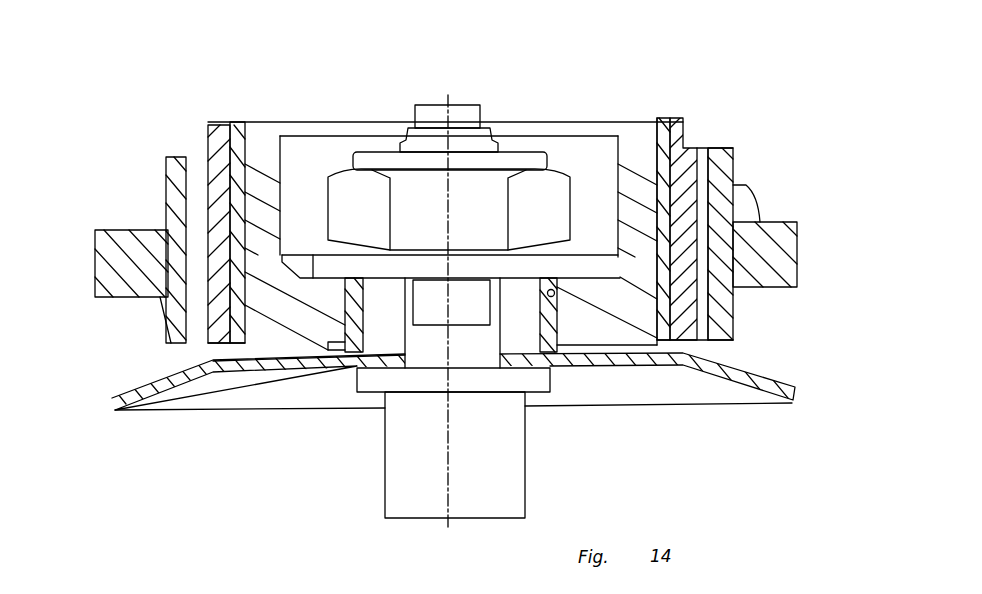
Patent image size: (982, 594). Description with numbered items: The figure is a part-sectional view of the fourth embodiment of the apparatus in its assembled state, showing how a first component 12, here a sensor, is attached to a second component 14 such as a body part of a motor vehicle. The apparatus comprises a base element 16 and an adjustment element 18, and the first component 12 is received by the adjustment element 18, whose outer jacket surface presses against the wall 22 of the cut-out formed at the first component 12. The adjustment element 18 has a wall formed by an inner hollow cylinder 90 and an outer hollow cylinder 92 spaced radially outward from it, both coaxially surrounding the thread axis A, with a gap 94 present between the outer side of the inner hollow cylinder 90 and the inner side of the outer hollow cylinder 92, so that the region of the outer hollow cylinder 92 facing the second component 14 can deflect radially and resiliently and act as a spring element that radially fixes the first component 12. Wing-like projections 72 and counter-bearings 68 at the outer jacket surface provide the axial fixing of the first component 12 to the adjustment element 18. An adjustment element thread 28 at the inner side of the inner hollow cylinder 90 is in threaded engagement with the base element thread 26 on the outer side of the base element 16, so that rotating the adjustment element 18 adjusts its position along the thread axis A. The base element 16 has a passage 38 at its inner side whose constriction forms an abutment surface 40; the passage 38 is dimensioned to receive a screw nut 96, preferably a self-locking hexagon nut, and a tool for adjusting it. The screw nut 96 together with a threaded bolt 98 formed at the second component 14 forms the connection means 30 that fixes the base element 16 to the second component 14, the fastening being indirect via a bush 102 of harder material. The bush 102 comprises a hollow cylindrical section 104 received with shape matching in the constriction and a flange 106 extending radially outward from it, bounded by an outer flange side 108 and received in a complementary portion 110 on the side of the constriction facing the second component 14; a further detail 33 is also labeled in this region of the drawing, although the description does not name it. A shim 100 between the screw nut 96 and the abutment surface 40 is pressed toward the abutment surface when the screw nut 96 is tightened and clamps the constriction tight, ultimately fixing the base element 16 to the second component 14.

The first component 12 is at (122, 226).
The second component 14 is at (754, 369).
The base element 16 is at (268, 355).
The adjustment element 18 is at (207, 129).
The wall 22 is at (790, 258).
The base element thread 26 is at (665, 202).
The adjustment element thread 28 is at (663, 150).
The connection means 30 is at (658, 48).
The opening 33 is at (558, 297).
The passage 38 is at (277, 192).
The abutment surface 40 is at (297, 257).
The counter-bearing 68 is at (160, 297).
The wing-like projection 72 is at (748, 207).
The inner hollow cylinder 90 is at (210, 150).
The outer hollow cylinder 92 is at (168, 154).
The gap 94 is at (197, 345).
The screw nut 96 is at (548, 197).
The threaded bolt 98 is at (472, 118).
The shim 100 is at (573, 263).
The bush 102 is at (343, 360).
The hollow cylindrical section 104 is at (559, 350).
The flange 106 is at (335, 356).
The outer flange side 108 is at (295, 360).
The portion 110 is at (563, 342).
The thread axis A is at (452, 98).